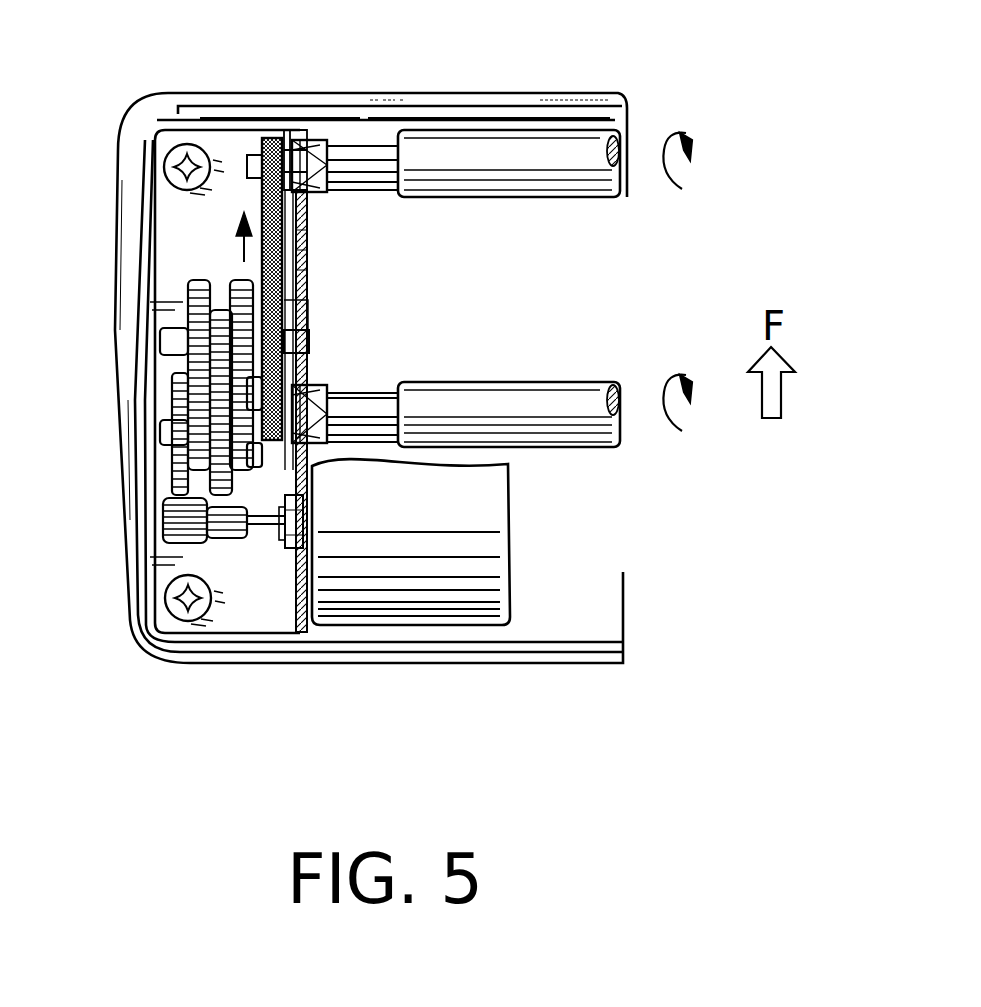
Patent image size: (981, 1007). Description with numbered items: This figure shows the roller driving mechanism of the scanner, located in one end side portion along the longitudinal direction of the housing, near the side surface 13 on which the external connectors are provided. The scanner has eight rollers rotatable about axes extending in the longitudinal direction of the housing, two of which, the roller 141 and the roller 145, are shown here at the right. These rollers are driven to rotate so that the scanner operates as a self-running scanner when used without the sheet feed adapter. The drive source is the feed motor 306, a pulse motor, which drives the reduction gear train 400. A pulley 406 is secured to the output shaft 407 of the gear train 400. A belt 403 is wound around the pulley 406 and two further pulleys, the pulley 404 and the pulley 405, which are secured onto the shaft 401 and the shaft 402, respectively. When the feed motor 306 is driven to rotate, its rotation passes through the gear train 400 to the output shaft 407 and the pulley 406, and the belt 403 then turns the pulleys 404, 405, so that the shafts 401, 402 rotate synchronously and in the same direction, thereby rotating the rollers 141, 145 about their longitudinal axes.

The side surface 13 is at (496, 80).
The roller 141 is at (533, 398).
The roller 145 is at (500, 183).
The feed motor 306 is at (480, 540).
The reduction gear train 400 is at (122, 385).
The shaft 401 is at (313, 448).
The shaft 402 is at (318, 148).
The belt 403 is at (337, 255).
The pulley 404 is at (297, 452).
The pulley 405 is at (250, 145).
The pulley 406 is at (305, 320).
The output shaft 407 is at (307, 340).